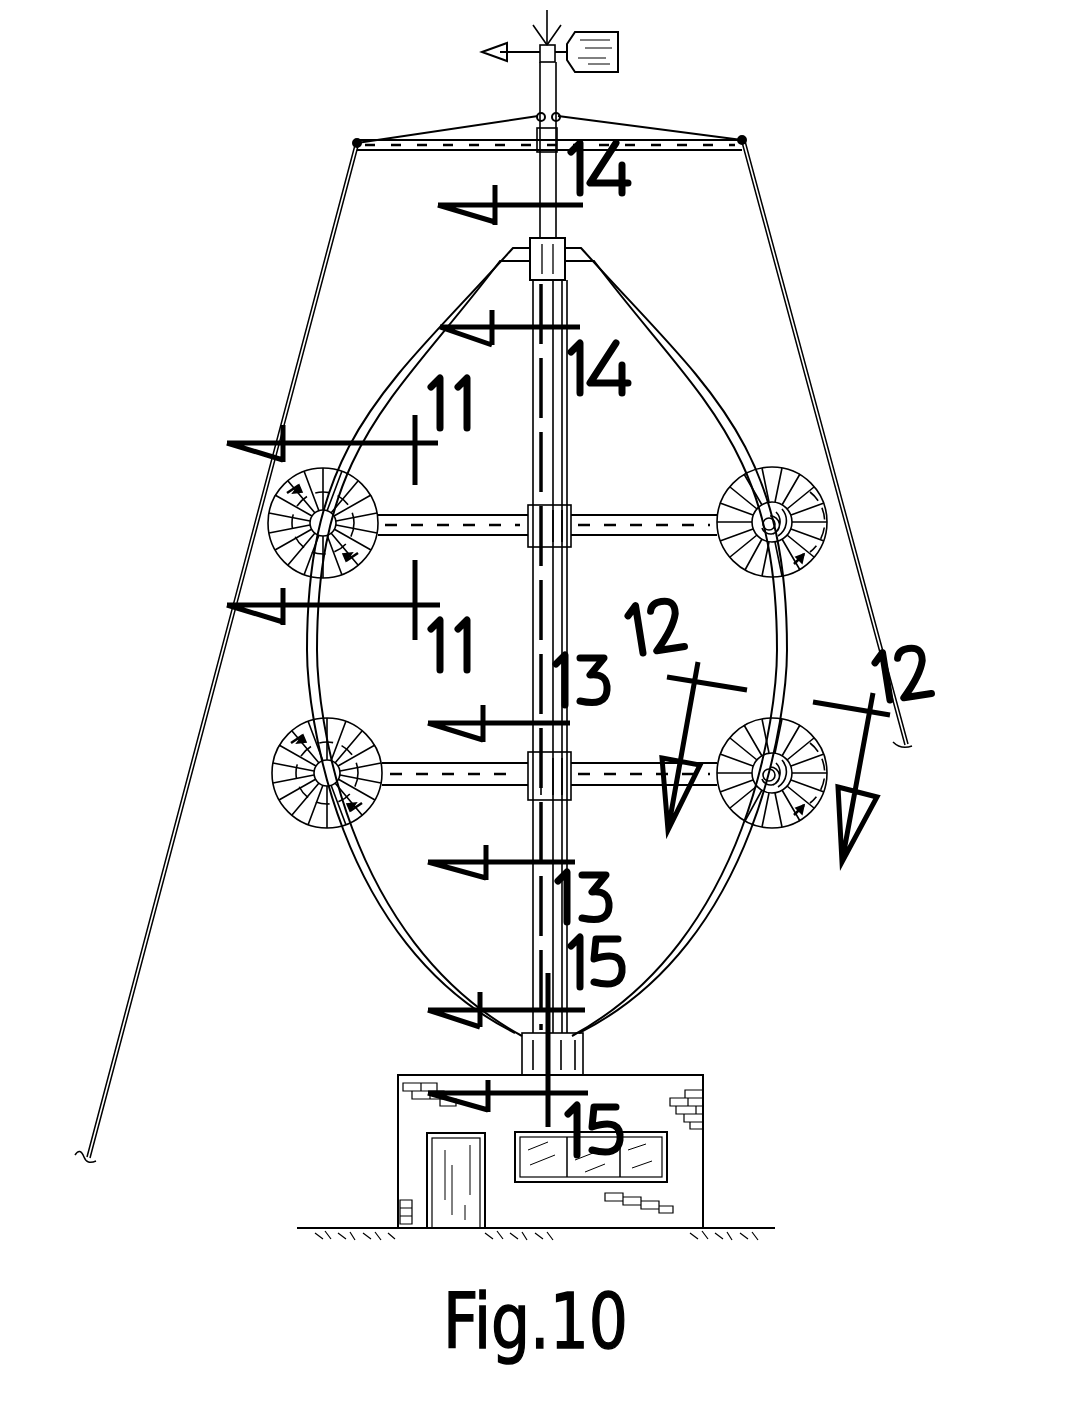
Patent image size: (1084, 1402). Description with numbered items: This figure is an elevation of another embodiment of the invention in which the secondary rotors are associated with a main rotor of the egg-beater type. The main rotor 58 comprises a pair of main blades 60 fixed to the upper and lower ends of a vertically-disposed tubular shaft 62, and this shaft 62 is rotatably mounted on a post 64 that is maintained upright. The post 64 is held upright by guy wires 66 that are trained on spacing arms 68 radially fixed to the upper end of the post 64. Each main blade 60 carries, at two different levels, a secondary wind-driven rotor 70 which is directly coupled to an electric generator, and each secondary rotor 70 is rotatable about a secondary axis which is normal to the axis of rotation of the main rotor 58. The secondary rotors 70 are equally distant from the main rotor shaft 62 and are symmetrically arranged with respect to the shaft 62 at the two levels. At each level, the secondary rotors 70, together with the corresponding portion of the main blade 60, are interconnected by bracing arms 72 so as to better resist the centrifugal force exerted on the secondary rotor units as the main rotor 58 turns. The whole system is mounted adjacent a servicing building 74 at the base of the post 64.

The main rotor 58 is at (697, 334).
The main blades 60 is at (652, 312).
The tubular shaft 62 is at (565, 312).
The post 64 is at (548, 163).
The guy wires 66 is at (760, 190).
The spacing arms 68 is at (702, 148).
The secondary wind-driven rotor 70 is at (745, 478).
The bracing arms 72 is at (655, 516).
The servicing building 74 is at (660, 1088).